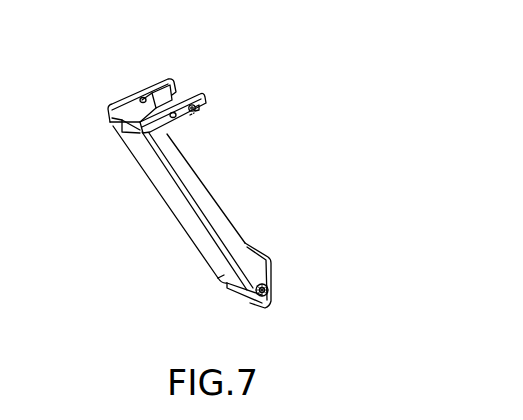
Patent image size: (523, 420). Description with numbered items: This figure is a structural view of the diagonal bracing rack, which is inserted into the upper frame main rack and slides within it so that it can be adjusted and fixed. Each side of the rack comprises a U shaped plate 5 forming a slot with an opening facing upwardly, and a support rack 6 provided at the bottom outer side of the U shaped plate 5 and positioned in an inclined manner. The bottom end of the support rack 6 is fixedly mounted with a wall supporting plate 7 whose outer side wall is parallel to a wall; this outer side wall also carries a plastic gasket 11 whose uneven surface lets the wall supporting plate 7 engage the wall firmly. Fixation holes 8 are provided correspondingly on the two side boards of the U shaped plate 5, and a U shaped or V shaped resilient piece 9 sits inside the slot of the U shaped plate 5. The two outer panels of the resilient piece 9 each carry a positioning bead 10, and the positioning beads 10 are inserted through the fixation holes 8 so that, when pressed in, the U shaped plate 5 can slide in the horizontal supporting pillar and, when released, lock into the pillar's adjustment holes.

The U shaped plate 5 is at (118, 108).
The support rack 6 is at (195, 196).
The wall supporting plate 7 is at (274, 273).
The fixation holes 8 is at (192, 118).
The U shaped or V shaped resilient piece 9 is at (147, 92).
The positioning beads 10 is at (197, 106).
The plastic gasket 11 is at (272, 259).